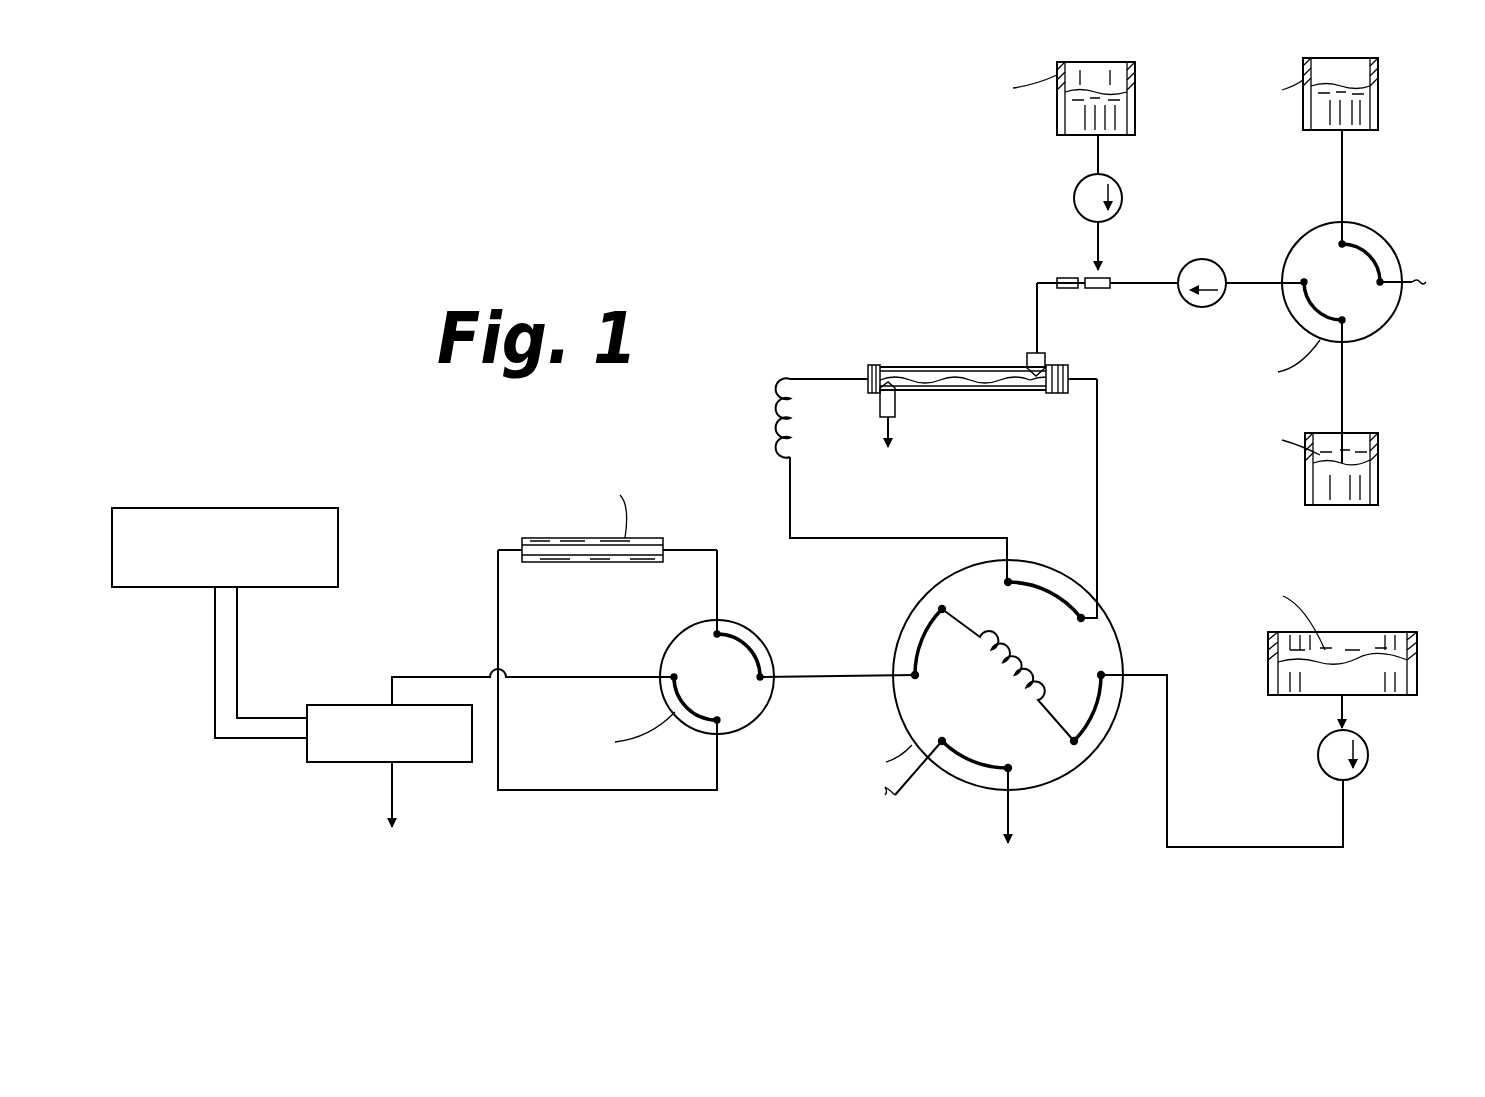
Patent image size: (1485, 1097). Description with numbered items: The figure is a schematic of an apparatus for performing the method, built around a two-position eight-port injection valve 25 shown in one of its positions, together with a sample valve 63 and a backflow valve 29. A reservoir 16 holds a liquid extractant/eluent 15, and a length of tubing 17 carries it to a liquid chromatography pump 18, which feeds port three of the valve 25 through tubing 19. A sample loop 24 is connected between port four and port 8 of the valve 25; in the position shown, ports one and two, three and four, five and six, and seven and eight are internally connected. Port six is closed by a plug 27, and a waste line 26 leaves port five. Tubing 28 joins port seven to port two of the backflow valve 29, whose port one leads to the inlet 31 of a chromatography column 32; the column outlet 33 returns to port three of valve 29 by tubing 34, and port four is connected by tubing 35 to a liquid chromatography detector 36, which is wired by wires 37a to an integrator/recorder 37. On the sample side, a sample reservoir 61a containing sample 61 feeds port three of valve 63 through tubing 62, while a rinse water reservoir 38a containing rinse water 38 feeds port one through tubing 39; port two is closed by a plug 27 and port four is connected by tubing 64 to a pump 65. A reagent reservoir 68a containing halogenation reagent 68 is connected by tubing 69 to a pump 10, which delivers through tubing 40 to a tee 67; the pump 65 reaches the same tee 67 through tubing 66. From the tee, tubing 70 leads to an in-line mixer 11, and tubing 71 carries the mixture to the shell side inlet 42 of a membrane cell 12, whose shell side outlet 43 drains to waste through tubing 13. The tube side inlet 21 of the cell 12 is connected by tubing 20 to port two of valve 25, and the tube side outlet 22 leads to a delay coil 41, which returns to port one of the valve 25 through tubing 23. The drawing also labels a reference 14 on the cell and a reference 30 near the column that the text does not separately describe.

The port 8 is at (893, 690).
The pump 10 is at (1074, 196).
The in-line mixer 11 is at (1065, 278).
The membrane cell 12 is at (992, 392).
The tubing 13 is at (885, 426).
The phase separator 14 is at (925, 370).
The liquid extractant/eluent 15 is at (1392, 645).
The reservoir 16 is at (1285, 682).
The tubing 17 is at (1347, 705).
The liquid chromatography pump 18 is at (1362, 765).
The tubing 19 is at (1170, 762).
The tubing 20 is at (1099, 493).
The tube side inlet 21 is at (1080, 385).
The tube side outlet 22 is at (842, 377).
The tubing 23 is at (792, 490).
The sample loop 24 is at (1003, 672).
The injection valve 25 is at (905, 618).
The waste line 26 is at (1012, 812).
The plug 27 is at (1412, 278).
The tubing 28 is at (845, 674).
The backflow valve 29 is at (758, 642).
The line 30 is at (719, 598).
The inlet 31 is at (712, 548).
The chromatography column 32 is at (600, 562).
The outlet 33 is at (496, 546).
The tubing 34 is at (500, 632).
The tubing 35 is at (437, 676).
The liquid chromatography detector 36 is at (310, 755).
The integrator/recorder 37 is at (248, 507).
The wires 37a is at (240, 647).
The rinse water 38 is at (1380, 80).
The rinse water reservoir 38a is at (1378, 90).
The tubing 39 is at (1344, 168).
The tubing 40 is at (1096, 245).
The delay coil 41 is at (780, 410).
The shell side inlet 42 is at (1046, 360).
The shell side outlet 43 is at (896, 405).
The sample 61 is at (1355, 445).
The sample reservoir 61a is at (1355, 500).
The tubing 62 is at (1345, 375).
The valve 63 is at (1298, 238).
The tubing 64 is at (1250, 281).
The pump 65 is at (1212, 260).
The tubing 66 is at (1150, 281).
The tee 67 is at (1104, 277).
The halogenation reagent 68 is at (1105, 75).
The reagent reservoir 68a is at (1130, 118).
The tubing 69 is at (1097, 150).
The tubing 70 is at (1090, 290).
The tubing 71 is at (1036, 296).